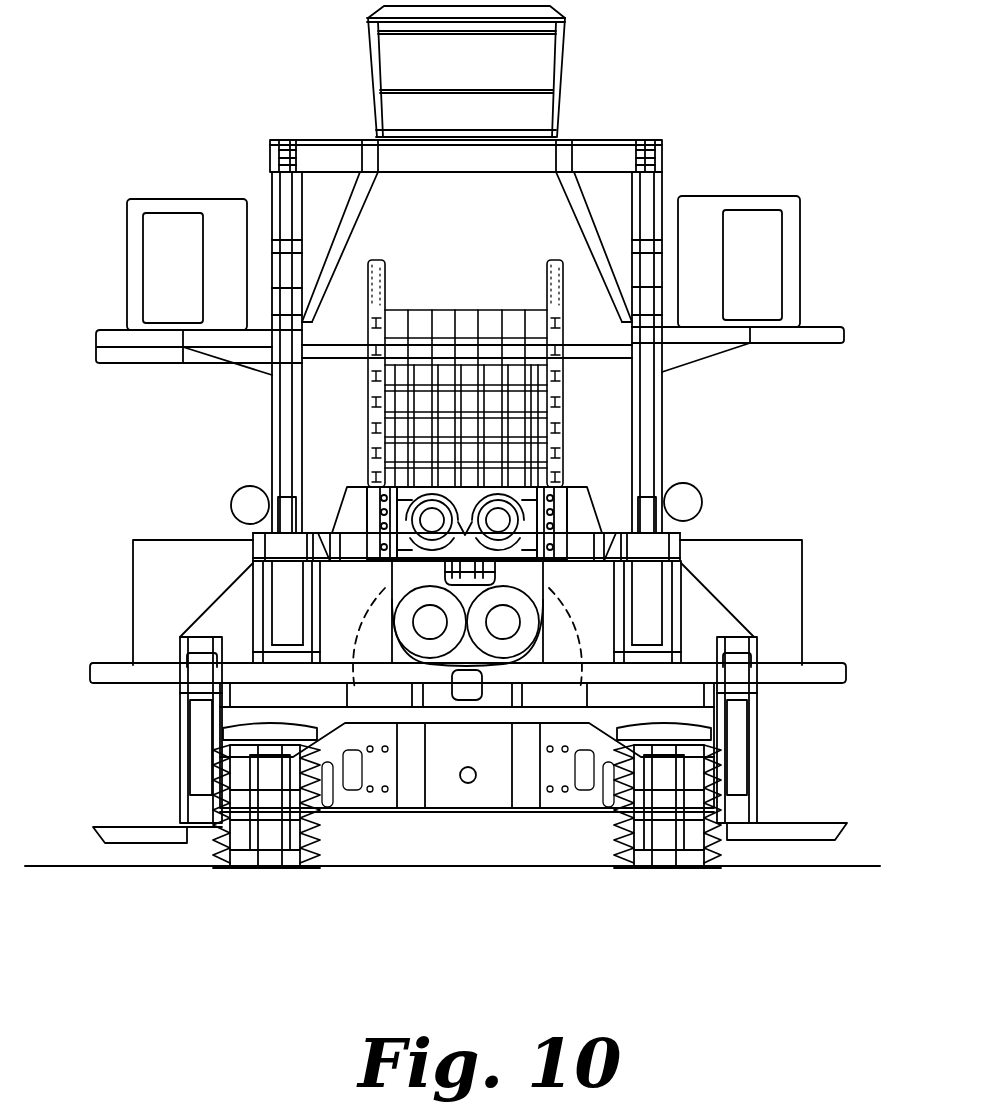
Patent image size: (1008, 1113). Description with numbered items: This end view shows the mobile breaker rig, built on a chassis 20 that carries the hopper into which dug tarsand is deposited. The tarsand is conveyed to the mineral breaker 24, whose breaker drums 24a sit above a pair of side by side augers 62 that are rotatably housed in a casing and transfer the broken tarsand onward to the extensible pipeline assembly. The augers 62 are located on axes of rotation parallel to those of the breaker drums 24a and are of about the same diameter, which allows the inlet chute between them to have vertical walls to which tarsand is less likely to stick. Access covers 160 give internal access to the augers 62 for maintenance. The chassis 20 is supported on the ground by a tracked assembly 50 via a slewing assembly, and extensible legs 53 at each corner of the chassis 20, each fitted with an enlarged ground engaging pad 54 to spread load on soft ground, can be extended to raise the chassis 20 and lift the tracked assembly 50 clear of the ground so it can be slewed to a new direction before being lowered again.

The chassis 20 is at (740, 640).
The mineral breaker 24 is at (582, 502).
The breaker drums 24a is at (347, 499).
The tracked assembly 50 is at (318, 852).
The extensible legs 53 is at (197, 730).
The ground engaging pad 54 is at (120, 830).
The augers 62 is at (420, 655).
The access covers 160 is at (357, 645).